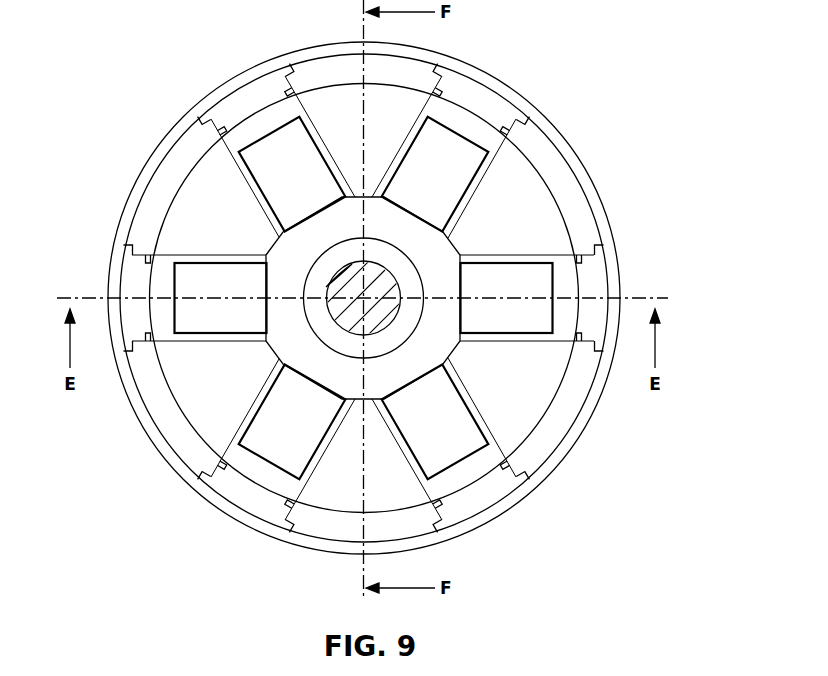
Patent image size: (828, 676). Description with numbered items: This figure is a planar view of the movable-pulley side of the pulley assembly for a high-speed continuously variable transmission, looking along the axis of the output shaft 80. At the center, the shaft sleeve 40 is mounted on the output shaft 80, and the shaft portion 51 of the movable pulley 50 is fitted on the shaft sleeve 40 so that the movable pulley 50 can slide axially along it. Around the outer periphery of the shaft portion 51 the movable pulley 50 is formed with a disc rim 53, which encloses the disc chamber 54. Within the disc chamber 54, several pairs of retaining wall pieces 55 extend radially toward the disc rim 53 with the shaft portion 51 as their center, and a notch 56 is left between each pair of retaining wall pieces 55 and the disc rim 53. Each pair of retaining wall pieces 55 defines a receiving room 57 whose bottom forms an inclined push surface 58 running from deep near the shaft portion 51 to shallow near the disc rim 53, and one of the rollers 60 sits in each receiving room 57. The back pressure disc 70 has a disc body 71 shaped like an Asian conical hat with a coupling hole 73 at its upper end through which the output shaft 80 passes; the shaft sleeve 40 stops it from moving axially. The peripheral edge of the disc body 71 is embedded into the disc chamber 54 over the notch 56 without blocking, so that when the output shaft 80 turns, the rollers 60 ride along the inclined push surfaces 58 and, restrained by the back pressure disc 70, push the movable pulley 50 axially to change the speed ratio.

The shaft sleeve 40 is at (317, 279).
The movable pulley 50 is at (200, 446).
The shaft portion 51 is at (268, 350).
The disc rim 53 is at (596, 188).
The disc chamber 54 is at (547, 161).
The retaining wall pieces 55 is at (598, 244).
The notch 56 is at (578, 283).
The receiving room 57 is at (558, 322).
The inclined push surface 58 is at (594, 318).
The rollers 60 is at (466, 322).
The back pressure disc 70 is at (328, 522).
The disc body 71 is at (512, 157).
The coupling hole 73 is at (380, 265).
The output shaft 80 is at (347, 324).